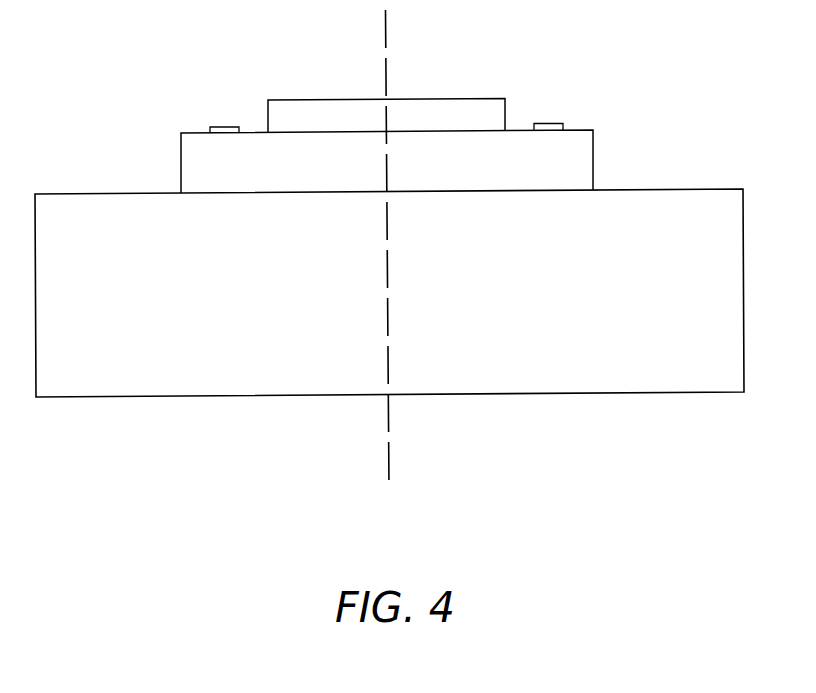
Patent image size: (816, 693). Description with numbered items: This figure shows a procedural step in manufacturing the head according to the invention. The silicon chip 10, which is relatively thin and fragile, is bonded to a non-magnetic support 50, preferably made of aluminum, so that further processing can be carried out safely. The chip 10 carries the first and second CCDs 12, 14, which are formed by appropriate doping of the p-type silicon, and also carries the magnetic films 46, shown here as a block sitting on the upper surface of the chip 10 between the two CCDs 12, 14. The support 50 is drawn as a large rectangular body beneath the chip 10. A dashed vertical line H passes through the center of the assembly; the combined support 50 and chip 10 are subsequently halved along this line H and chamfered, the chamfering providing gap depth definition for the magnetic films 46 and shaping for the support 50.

The silicon chip 10 is at (604, 156).
The first CCD 12 is at (223, 127).
The second CCD 14 is at (553, 123).
The magnetic films 46 is at (431, 99).
The non-magnetic support 50 is at (692, 382).
The line H is at (392, 466).